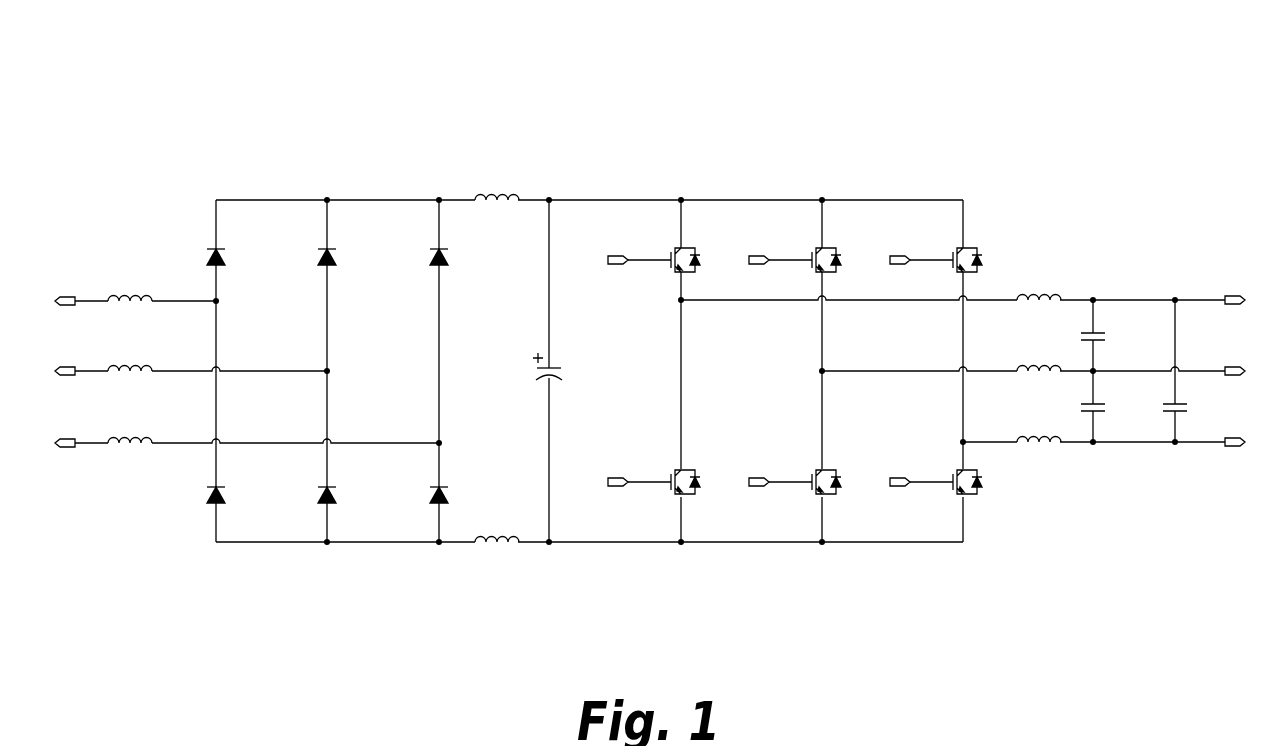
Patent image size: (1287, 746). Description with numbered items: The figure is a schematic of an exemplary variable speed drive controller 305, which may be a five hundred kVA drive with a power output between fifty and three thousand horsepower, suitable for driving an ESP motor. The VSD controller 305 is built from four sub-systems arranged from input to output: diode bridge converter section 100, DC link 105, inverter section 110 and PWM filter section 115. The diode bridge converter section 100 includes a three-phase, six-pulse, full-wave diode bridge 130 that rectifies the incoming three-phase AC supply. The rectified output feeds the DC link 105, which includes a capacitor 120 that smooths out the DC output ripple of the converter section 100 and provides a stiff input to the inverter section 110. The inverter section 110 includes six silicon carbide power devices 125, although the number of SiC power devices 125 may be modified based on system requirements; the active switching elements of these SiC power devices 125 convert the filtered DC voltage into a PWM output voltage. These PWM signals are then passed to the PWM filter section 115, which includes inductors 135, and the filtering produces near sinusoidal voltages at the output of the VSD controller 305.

The VSD controller 305 is at (918, 88).
The diode bridge converter section 100 is at (333, 582).
The DC link 105 is at (535, 625).
The inverter section 110 is at (810, 625).
The PWM filter section 115 is at (1110, 545).
The capacitor 120 is at (551, 372).
The SiC power devices 125 is at (676, 246).
The three-phase, six-pulse, full-wave diode bridge 130 is at (327, 310).
The inductors 135 is at (1045, 293).